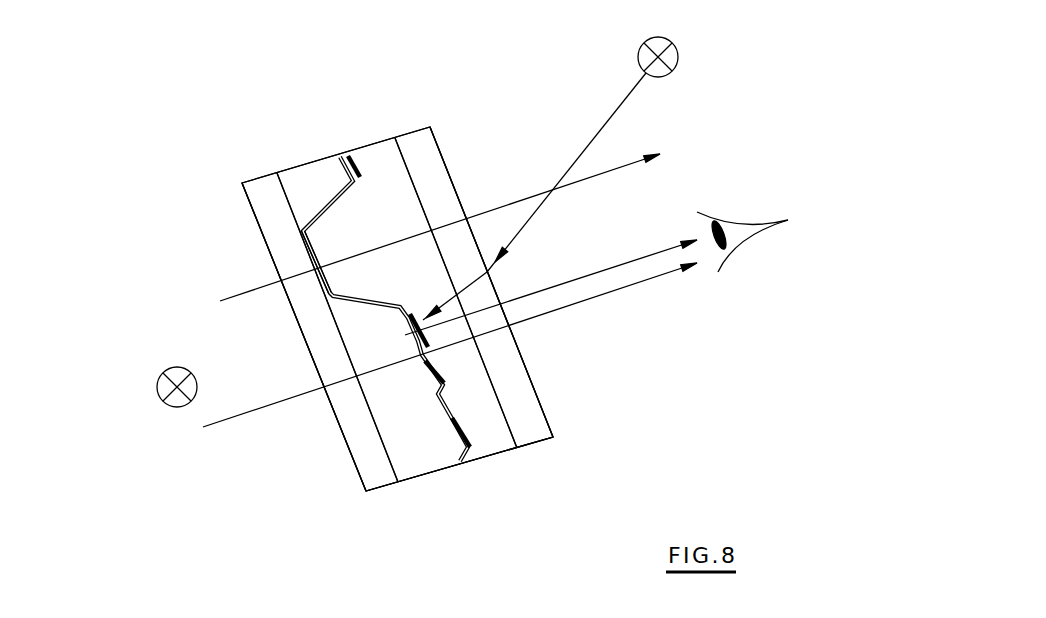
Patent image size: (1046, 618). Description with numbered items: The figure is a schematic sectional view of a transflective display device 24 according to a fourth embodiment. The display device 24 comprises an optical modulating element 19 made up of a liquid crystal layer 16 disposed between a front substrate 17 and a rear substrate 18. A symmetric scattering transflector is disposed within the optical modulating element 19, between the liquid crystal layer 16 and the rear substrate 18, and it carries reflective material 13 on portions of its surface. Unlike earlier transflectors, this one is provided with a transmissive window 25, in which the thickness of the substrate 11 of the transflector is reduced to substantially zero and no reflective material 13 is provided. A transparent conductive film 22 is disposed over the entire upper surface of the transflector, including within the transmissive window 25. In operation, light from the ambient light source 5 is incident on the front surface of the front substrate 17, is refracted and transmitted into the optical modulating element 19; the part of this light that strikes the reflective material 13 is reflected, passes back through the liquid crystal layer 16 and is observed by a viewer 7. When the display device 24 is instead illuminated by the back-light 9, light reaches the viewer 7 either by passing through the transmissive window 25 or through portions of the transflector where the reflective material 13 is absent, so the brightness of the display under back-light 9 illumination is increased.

The ambient light source 5 is at (743, 48).
The viewer 7 is at (769, 260).
The back-light 9 is at (181, 372).
The substrate 11 is at (403, 413).
The reflective material 13 is at (470, 443).
The liquid crystal layer 16 is at (367, 160).
The front substrate 17 is at (518, 393).
The rear substrate 18 is at (260, 187).
The optical modulating element 19 is at (383, 550).
The transparent conductive film 22 is at (462, 455).
The display device 24 is at (488, 157).
The transmissive window 25 is at (308, 258).